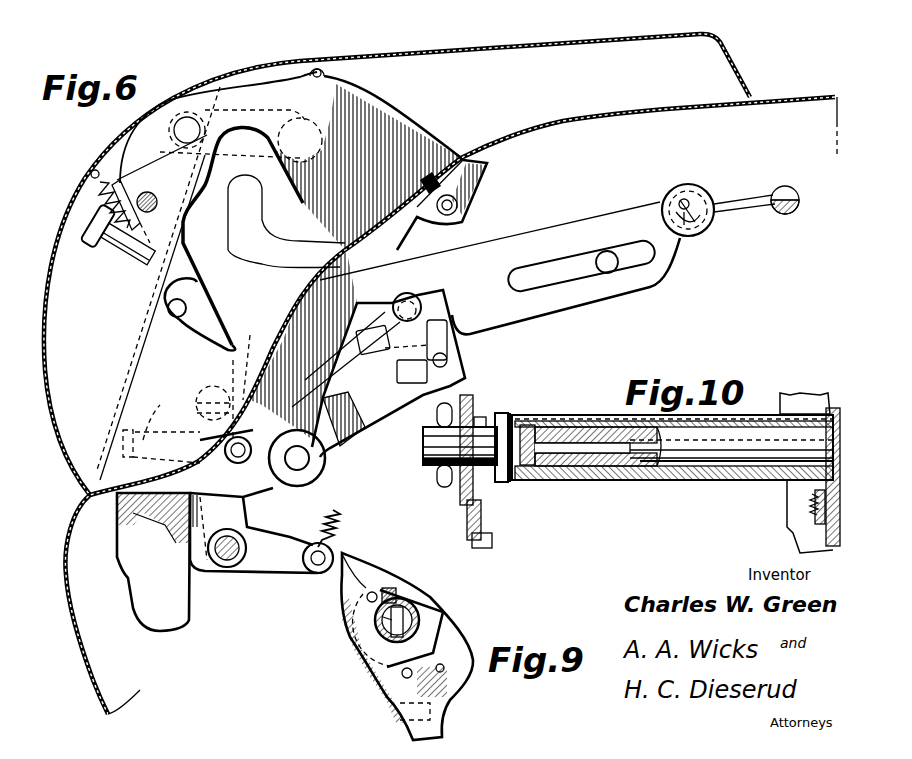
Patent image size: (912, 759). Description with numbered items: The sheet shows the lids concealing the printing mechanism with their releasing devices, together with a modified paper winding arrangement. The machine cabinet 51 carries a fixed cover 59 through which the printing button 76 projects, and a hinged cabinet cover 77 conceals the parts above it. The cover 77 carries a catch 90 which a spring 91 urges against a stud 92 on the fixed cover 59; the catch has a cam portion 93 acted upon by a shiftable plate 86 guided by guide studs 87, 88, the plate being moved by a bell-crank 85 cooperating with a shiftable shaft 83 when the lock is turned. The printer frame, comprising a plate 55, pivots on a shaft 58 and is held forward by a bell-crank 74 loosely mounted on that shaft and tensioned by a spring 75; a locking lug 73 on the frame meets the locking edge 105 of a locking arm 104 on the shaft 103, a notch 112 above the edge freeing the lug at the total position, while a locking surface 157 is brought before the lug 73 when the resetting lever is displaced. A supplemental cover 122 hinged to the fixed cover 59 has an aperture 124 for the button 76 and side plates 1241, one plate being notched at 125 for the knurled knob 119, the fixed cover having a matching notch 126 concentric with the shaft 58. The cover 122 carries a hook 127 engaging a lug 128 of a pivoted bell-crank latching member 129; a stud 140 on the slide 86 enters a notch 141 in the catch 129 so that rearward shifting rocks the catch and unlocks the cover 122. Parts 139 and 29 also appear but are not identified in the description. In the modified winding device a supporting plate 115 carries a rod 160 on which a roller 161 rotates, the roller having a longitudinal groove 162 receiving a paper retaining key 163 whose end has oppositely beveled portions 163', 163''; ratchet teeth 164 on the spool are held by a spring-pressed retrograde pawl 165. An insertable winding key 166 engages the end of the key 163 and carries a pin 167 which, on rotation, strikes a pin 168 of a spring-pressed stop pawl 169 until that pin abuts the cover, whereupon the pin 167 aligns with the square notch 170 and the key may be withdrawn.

In FIG. 6, the hinged cabinet cover 77 is at (370, 63).
In FIG. 6, the machine cabinet 51 is at (588, 113).
In FIG. 6, the notch 125 is at (205, 110).
In FIG. 6, the notch 126 is at (296, 117).
In FIG. 6, the knurled knob 119 is at (176, 135).
In FIG. 6, the cam rib 139 is at (293, 193).
In FIG. 6, the cam portion 93 is at (203, 195).
In FIG. 6, the cam slot 29 is at (233, 187).
In FIG. 6, the spring 91 is at (98, 195).
In FIG. 6, the printing button 76 is at (100, 225).
In FIG. 6, the supplemental cover 122 is at (147, 270).
In FIG. 6, the stud 92 is at (170, 306).
In FIG. 6, the side plates 1241 is at (112, 320).
In FIG. 10, the side plates 1241 is at (462, 492).
In FIG. 9, the side plates 1241 is at (460, 630).
In FIG. 6, the catch 90 is at (200, 314).
In FIG. 6, the fixed cover 59 is at (159, 359).
In FIG. 6, the locking surface 157 is at (254, 367).
In FIG. 6, the locking edge 105 is at (229, 398).
In FIG. 6, the locking lug 73 is at (205, 395).
In FIG. 6, the hook 127 is at (145, 432).
In FIG. 6, the lug 128 is at (122, 440).
In FIG. 6, the notch 112 is at (338, 392).
In FIG. 6, the locking arm 104 is at (352, 400).
In FIG. 6, the bell-crank latching member 129 is at (385, 415).
In FIG. 6, the shaft 103 is at (310, 460).
In FIG. 6, the guide stud 88 is at (414, 296).
In FIG. 6, the stud 140 is at (450, 360).
In FIG. 6, the notch 141 is at (462, 384).
In FIG. 6, the shiftable plate 86 is at (492, 247).
In FIG. 6, the guide stud 87 is at (609, 251).
In FIG. 6, the bell-crank 85 is at (748, 206).
In FIG. 6, the shiftable shaft 83 is at (785, 215).
In FIG. 6, the bell-crank 74 is at (227, 485).
In FIG. 6, the shaft 58 is at (228, 560).
In FIG. 6, the spring 75 is at (334, 519).
In FIG. 10, the rod 160 is at (671, 447).
In FIG. 10, the roller 161 is at (683, 472).
In FIG. 10, the longitudinal groove 162 is at (565, 427).
In FIG. 10, the paper retaining key 163 is at (588, 428).
In FIG. 10, the ratchet teeth 164 is at (820, 487).
In FIG. 10, the retrograde pawl 165 is at (800, 540).
In FIG. 10, the plate 55 is at (795, 528).
In FIG. 10, the supporting plate 115 is at (795, 507).
In FIG. 10, the winding key 166 is at (465, 445).
In FIG. 9, the winding key 166 is at (413, 608).
In FIG. 9, the aperture 124 is at (363, 562).
In FIG. 9, the pin 167 is at (372, 567).
In FIG. 9, the square notch 170 is at (397, 588).
In FIG. 9, the pin 168 is at (367, 595).
In FIG. 9, the beveled portion 163' is at (344, 609).
In FIG. 9, the beveled portion 163'' is at (338, 630).
In FIG. 9, the stop pawl 169 is at (378, 680).